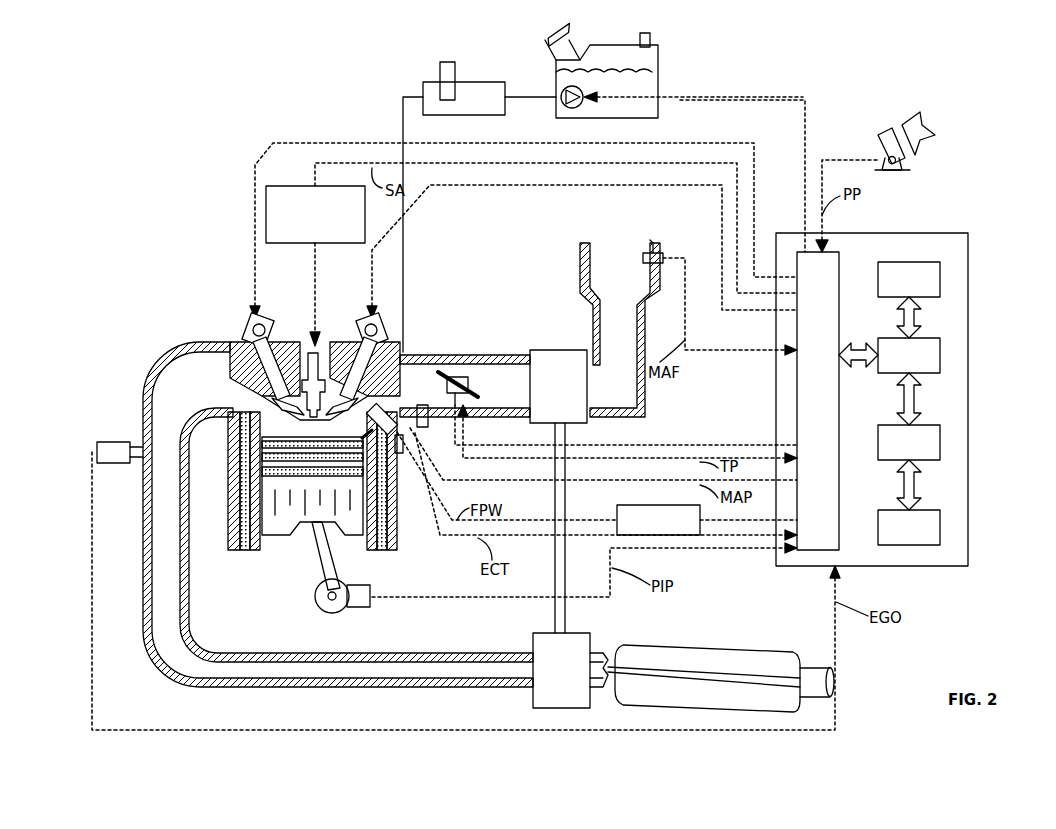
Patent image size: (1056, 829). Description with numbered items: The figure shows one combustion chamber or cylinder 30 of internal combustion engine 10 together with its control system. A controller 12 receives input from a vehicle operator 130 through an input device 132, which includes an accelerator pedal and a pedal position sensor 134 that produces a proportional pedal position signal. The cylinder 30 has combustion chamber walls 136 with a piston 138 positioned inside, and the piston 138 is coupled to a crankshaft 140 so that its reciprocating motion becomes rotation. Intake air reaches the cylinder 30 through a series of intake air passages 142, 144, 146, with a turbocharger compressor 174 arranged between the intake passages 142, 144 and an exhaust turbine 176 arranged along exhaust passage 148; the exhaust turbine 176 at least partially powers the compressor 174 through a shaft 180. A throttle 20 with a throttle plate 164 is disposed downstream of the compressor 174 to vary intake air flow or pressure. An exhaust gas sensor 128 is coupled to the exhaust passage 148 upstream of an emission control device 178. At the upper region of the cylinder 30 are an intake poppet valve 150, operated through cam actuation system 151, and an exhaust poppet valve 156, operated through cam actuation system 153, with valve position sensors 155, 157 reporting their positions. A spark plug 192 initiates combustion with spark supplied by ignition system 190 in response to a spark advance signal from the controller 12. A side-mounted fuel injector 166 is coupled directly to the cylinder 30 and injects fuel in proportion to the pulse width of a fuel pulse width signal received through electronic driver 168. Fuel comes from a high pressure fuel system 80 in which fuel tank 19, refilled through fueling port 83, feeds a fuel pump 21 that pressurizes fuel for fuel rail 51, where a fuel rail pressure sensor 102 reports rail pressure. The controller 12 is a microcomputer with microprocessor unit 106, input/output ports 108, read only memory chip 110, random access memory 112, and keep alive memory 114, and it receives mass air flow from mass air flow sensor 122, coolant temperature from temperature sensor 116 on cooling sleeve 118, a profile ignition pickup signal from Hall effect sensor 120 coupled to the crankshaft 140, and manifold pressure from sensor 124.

The internal combustion engine 10 is at (88, 92).
The controller 12 is at (968, 236).
The fuel tank 19 is at (658, 95).
The throttle 20 is at (460, 378).
The fuel pump 21 is at (583, 93).
The cylinder 30 is at (237, 445).
The fuel rail 51 is at (505, 90).
The high pressure fuel system 80 is at (726, 34).
The fueling port 83 is at (552, 33).
The fuel rail pressure sensor 102 is at (455, 68).
The microprocessor unit 106 is at (940, 352).
The input/output ports 108 is at (840, 262).
The read only memory chip 110 is at (940, 276).
The random access memory 112 is at (940, 438).
The keep alive memory 114 is at (940, 523).
The temperature sensor 116 is at (400, 455).
The cooling sleeve 118 is at (392, 550).
The Hall effect sensor 120 is at (360, 607).
The mass air flow sensor 122 is at (658, 250).
The manifold pressure sensor 124 is at (423, 427).
The exhaust gas sensor 128 is at (97, 445).
The vehicle operator 130 is at (920, 128).
The input device 132 is at (876, 140).
The pedal position sensor 134 is at (902, 162).
The combustion chamber walls 136 is at (250, 560).
The piston 138 is at (300, 510).
The crankshaft 140 is at (325, 612).
The intake air passage 142 is at (620, 330).
The intake air passage 144 is at (465, 396).
The intake air passage 146 is at (417, 386).
The exhaust passage 148 is at (204, 391).
The intake poppet valve 150 is at (332, 365).
The cam actuation system 151 is at (368, 312).
The cam actuation system 153 is at (262, 312).
The valve position sensor 155 is at (378, 325).
The exhaust poppet valve 156 is at (272, 398).
The valve position sensor 157 is at (252, 325).
The throttle plate 164 is at (420, 356).
The fuel injector 166 is at (374, 415).
The electronic driver 168 is at (617, 508).
The compressor 174 is at (548, 350).
The exhaust turbine 176 is at (530, 695).
The emission control device 178 is at (760, 650).
The shaft 180 is at (563, 603).
The ignition system 190 is at (280, 186).
The spark plug 192 is at (303, 380).